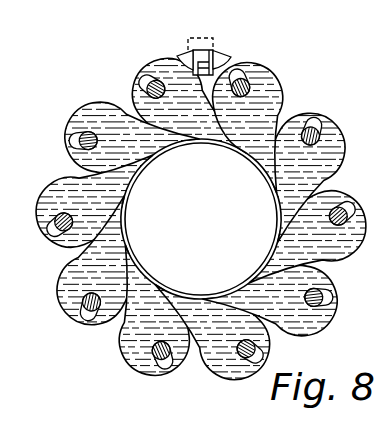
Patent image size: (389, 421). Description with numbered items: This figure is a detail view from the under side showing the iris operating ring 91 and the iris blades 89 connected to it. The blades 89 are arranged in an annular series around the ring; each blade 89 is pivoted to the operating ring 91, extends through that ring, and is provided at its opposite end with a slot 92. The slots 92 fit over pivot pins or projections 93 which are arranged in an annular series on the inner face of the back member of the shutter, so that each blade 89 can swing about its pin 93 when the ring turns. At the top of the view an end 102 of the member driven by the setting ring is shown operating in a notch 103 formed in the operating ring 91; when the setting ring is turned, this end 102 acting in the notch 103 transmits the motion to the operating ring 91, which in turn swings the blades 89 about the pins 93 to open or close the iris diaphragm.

The blades 89 is at (287, 191).
The operating ring 91 is at (296, 118).
The slots 92 is at (249, 361).
The pivot pins or projections 93 is at (153, 355).
The end 102 is at (215, 40).
The notch 103 is at (214, 72).